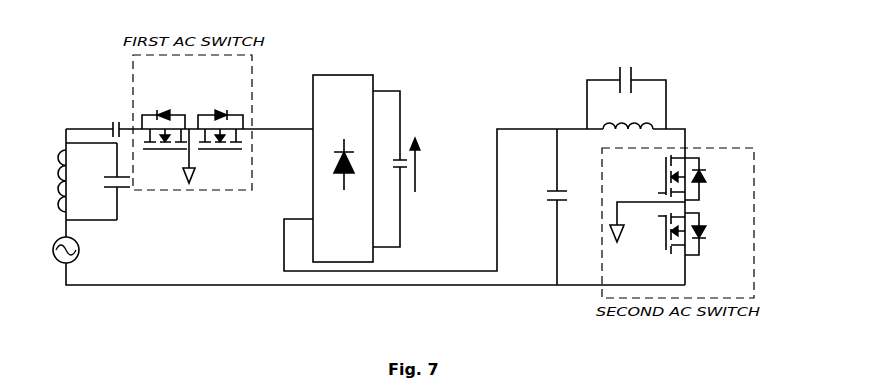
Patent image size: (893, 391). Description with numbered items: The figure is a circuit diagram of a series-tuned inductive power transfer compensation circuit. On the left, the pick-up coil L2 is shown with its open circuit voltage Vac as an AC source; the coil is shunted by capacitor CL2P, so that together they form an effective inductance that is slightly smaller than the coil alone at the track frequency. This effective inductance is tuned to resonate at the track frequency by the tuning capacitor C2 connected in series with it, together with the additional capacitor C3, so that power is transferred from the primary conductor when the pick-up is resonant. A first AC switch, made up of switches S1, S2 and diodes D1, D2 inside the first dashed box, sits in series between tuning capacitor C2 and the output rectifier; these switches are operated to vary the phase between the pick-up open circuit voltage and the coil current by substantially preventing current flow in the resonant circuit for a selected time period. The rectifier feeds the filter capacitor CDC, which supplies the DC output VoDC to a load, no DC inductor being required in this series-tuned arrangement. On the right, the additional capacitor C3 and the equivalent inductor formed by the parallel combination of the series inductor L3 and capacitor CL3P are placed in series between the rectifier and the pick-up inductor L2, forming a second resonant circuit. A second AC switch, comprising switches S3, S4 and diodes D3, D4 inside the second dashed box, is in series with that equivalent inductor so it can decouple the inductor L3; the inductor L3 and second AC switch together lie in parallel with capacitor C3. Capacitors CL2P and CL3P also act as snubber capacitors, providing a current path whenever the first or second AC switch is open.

The tuning capacitor C2 is at (113, 118).
The pick-up coil L2 is at (69, 181).
The capacitor CL2P is at (129, 181).
The pick-up coil open circuit voltage Vac is at (78, 250).
The diode D1 is at (163, 108).
The diode D2 is at (220, 108).
The switch S1 is at (165, 151).
The switch S2 is at (220, 151).
The filter capacitor CDC is at (390, 161).
The DC output VoDC is at (429, 159).
The additional capacitor C3 is at (566, 207).
The series inductor L3 is at (628, 117).
The capacitor CL3P is at (626, 89).
The switch S3 is at (665, 176).
The diode D3 is at (703, 179).
The switch S4 is at (665, 233).
The diode D4 is at (703, 234).